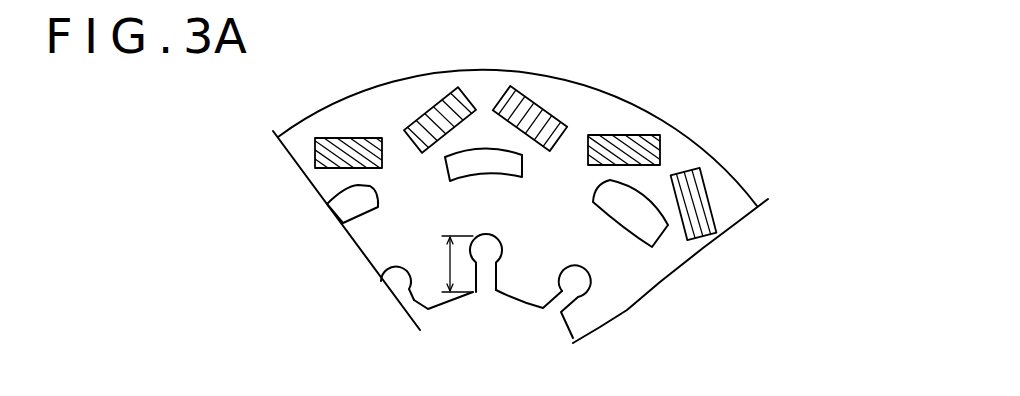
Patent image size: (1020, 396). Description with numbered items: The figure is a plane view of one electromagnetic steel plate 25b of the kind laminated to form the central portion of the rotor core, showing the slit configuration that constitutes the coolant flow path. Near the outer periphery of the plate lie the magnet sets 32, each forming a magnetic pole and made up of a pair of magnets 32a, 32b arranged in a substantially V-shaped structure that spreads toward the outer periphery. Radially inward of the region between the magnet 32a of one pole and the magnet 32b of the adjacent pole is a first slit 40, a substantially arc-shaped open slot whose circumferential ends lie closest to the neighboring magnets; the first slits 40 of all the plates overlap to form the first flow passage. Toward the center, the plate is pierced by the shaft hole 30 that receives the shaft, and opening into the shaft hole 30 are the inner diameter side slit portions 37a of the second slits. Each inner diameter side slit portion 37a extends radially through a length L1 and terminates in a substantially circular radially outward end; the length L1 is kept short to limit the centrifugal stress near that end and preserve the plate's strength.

The electromagnetic steel plate 25b is at (691, 133).
The shaft hole 30 is at (520, 295).
The magnet set 32 is at (537, 129).
The magnet 32a is at (348, 138).
The magnet 32b is at (539, 103).
The inner diameter side slit portion 37a is at (400, 303).
The first slit 40 is at (360, 186).
The radial length of inner diameter side slit portion L1 is at (445, 264).